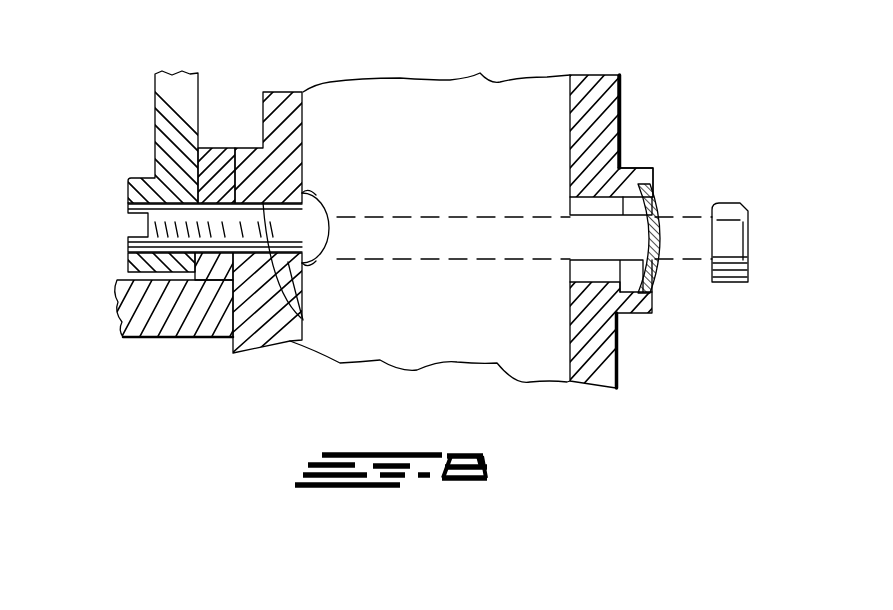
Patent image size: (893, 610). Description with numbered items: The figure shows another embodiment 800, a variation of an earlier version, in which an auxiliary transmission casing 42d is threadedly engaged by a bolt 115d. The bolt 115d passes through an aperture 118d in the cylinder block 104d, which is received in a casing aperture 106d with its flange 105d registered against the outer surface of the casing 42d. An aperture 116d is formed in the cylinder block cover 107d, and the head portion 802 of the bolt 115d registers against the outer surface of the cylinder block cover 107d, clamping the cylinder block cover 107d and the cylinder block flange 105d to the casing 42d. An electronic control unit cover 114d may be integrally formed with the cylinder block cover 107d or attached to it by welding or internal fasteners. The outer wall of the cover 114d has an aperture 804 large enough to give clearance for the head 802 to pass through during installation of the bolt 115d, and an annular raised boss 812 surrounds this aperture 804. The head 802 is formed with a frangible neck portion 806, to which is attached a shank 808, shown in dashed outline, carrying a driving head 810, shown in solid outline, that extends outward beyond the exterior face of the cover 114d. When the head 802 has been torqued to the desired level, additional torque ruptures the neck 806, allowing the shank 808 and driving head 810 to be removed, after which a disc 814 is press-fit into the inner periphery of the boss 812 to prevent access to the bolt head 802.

The auxiliary transmission casing 42d is at (183, 72).
The cylinder block 104d is at (127, 272).
The cylinder block flange 105d is at (215, 148).
The casing aperture 106d is at (138, 276).
The cylinder block cover 107d is at (282, 92).
The electronic control unit cover 114d is at (600, 75).
The bolt 115d is at (305, 282).
The aperture 116d is at (300, 318).
The aperture 118d is at (197, 268).
The embodiment 800 is at (692, 123).
The head portion 802 is at (327, 218).
The aperture 804 is at (588, 200).
The frangible neck portion 806 is at (331, 224).
The shank 808 is at (408, 260).
The driving head 810 is at (762, 211).
The annular raised boss 812 is at (636, 168).
The disc 814 is at (660, 210).